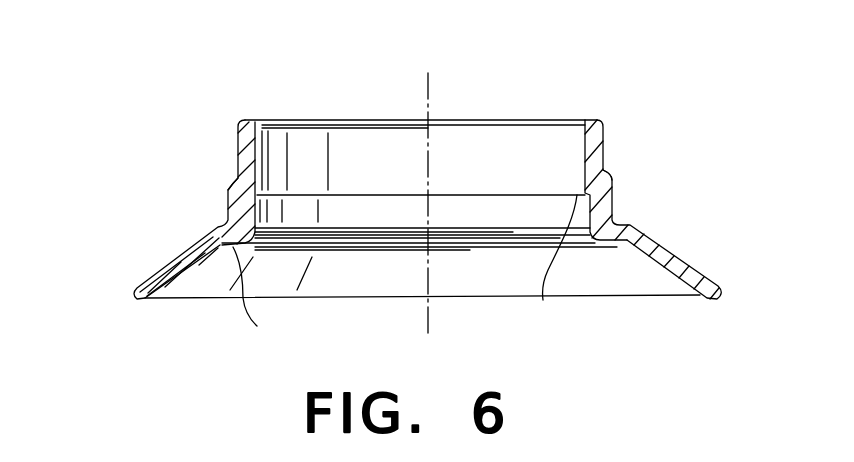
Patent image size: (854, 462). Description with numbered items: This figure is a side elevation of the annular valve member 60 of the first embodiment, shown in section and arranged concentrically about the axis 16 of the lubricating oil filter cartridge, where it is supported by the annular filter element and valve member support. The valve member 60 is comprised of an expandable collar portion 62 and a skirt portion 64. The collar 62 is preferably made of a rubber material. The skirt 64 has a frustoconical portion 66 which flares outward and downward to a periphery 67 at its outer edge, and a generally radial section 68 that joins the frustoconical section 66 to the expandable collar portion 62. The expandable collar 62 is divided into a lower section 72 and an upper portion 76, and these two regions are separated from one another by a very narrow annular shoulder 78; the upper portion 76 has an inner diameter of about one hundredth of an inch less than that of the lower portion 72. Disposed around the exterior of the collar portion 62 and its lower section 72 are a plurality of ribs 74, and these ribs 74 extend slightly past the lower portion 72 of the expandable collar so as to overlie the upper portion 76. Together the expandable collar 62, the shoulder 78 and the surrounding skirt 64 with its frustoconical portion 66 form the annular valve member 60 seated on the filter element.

The axis 16 is at (432, 103).
The valve member 60 is at (372, 115).
The expandable collar portion 62 is at (308, 150).
The skirt portion 64 is at (153, 262).
The frustoconical portion 66 is at (200, 288).
The periphery 67 is at (133, 298).
The radial section 68 is at (271, 301).
The lower section 72 is at (513, 210).
The ribs 74 is at (233, 208).
The upper portion 76 is at (562, 135).
The annular shoulder 78 is at (345, 197).